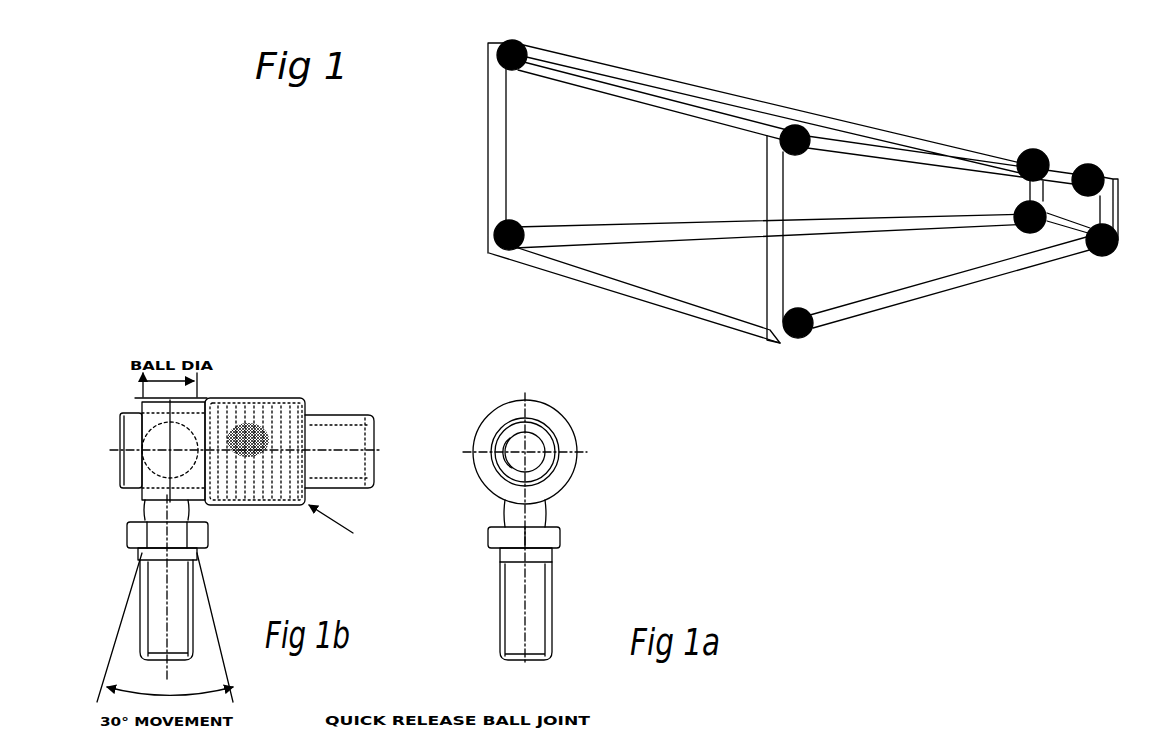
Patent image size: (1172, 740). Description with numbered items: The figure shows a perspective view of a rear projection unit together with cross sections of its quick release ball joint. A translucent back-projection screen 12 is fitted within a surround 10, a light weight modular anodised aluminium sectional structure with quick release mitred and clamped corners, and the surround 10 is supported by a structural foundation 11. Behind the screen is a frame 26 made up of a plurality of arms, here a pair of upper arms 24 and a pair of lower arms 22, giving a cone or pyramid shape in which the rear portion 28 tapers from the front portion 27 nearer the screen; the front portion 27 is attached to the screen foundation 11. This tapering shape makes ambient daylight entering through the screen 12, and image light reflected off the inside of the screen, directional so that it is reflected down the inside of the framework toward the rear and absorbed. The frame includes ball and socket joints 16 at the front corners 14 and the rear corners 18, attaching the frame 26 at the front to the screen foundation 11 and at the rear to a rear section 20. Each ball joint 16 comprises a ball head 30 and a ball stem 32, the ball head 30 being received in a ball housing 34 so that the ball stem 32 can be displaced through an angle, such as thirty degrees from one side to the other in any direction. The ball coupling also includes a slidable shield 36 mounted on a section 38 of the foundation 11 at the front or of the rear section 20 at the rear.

In FIG. 1, the surround 10 is at (584, 286).
In FIG. 1, the structural foundation 11 is at (802, 268).
In FIG. 1, the screen 12 is at (668, 266).
In FIG. 1, the front corners 14 is at (488, 257).
In FIG. 1, the ball and socket joints 16 is at (795, 124).
In FIG. 1A, the ball and socket joints 16 is at (669, 553).
In FIG. 1, the rear corners 18 is at (1033, 149).
In FIG. 1, the rear section 20 is at (1077, 212).
In FIG. 1, the lower arms 22 is at (676, 222).
In FIG. 1, the upper arms 24 is at (673, 80).
In FIG. 1, the frame 26 is at (908, 117).
In FIG. 1, the front portion 27 is at (860, 332).
In FIG. 1, the rear portion 28 is at (1008, 276).
In FIG. 1A, the ball head 30 is at (573, 470).
In FIG. 1B, the ball head 30 is at (142, 458).
In FIG. 1A, the ball stem 32 is at (554, 590).
In FIG. 1B, the ball stem 32 is at (140, 594).
In FIG. 1B, the ball housing 34 is at (121, 418).
In FIG. 1B, the slidable shield 36 is at (283, 398).
In FIG. 1B, the section 38 is at (353, 415).